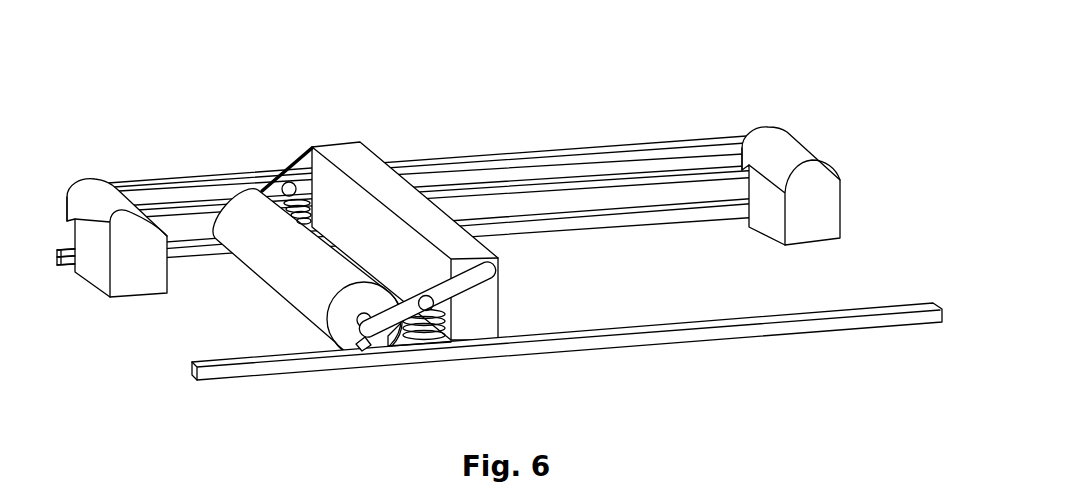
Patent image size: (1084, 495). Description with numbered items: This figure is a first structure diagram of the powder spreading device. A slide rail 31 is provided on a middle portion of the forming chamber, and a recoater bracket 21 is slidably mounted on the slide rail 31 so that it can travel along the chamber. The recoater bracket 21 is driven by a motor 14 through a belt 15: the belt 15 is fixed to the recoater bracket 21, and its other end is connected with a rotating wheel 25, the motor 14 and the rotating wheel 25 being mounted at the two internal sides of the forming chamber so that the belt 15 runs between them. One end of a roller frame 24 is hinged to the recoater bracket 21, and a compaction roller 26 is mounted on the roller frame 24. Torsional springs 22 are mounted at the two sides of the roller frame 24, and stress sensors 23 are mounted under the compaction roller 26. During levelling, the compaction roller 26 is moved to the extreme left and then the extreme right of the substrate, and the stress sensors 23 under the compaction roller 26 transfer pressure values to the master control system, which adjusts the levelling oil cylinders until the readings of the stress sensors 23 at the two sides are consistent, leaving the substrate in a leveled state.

The motor 14 is at (815, 193).
The belt 15 is at (671, 141).
The recoater bracket 21 is at (358, 160).
The torsional springs 22 is at (436, 347).
The stress sensors 23 is at (377, 350).
The roller frame 24 is at (464, 285).
The rotating wheel 25 is at (140, 274).
The compaction roller 26 is at (290, 288).
The slide rail 31 is at (883, 319).